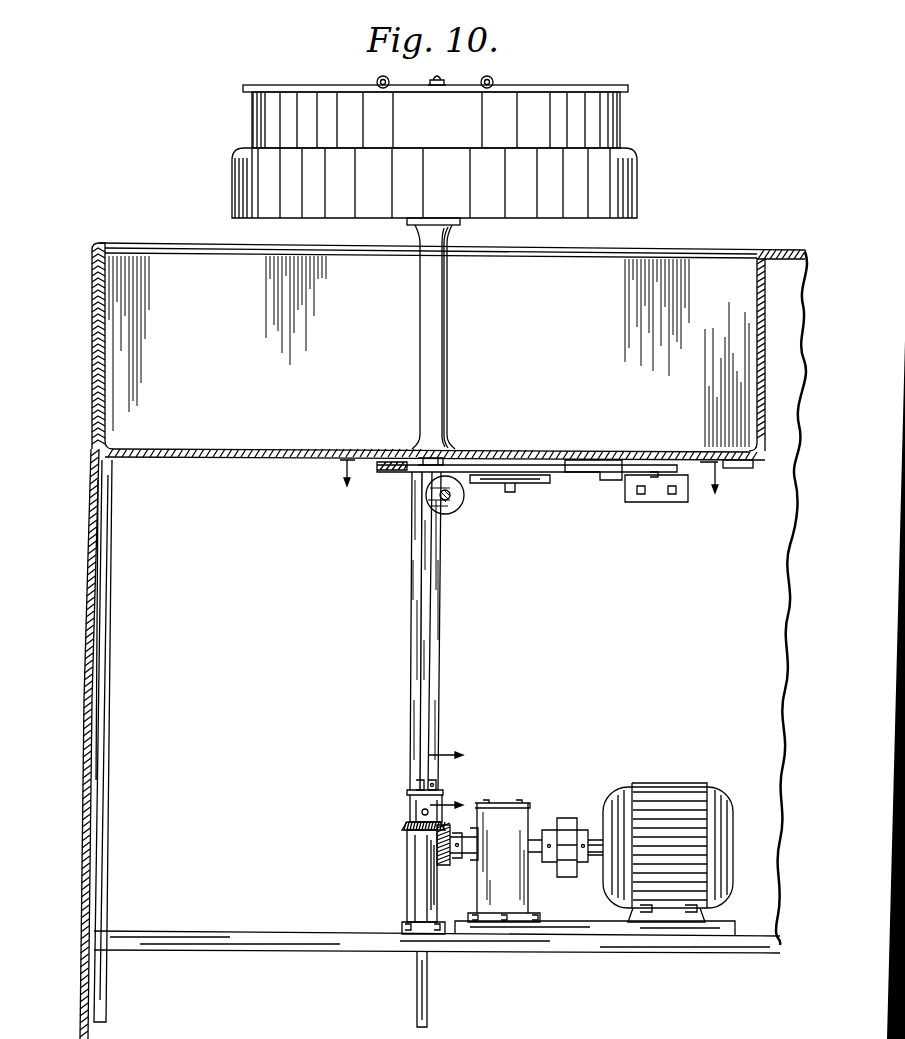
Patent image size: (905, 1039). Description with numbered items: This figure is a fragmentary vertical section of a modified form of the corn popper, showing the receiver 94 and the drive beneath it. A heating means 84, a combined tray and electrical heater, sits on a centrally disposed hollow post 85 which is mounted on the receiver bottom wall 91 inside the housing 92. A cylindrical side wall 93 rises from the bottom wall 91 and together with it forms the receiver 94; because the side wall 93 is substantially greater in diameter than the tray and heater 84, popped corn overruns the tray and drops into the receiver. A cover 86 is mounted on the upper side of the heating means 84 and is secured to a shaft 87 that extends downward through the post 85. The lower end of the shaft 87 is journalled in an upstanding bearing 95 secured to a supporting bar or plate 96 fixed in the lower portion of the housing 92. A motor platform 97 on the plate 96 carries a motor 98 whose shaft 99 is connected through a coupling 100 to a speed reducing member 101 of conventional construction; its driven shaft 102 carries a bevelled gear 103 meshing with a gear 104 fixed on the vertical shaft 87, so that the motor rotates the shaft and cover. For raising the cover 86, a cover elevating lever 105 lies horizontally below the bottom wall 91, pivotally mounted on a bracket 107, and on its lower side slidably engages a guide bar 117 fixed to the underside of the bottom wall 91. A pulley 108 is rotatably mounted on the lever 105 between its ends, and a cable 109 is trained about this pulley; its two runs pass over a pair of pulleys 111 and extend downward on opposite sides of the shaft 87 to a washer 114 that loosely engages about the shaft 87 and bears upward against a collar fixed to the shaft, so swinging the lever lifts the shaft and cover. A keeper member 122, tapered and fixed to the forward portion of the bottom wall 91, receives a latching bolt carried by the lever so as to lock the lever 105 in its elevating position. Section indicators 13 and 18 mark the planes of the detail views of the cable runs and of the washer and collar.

The heating means 84 is at (252, 173).
The hollow post 85 is at (427, 308).
The cover 86 is at (270, 115).
The shaft 87 is at (430, 677).
The receiver bottom wall 91 is at (217, 447).
The housing 92 is at (90, 596).
The cylindrical side wall 93 is at (103, 358).
The receiver 94 is at (108, 313).
The bearing 95 is at (420, 868).
The supporting bar or plate 96 is at (275, 934).
The motor platform 97 is at (580, 928).
The motor 98 is at (665, 790).
The motor shaft 99 is at (597, 844).
The coupling 100 is at (564, 830).
The speed reducing member 101 is at (508, 818).
The driven shaft 102 is at (466, 855).
The bevelled gear 103 is at (443, 865).
The gear 104 is at (408, 823).
The cover elevating lever 105 is at (552, 468).
The bracket 107 is at (628, 488).
The pulley 108 is at (532, 488).
The cable 109 is at (428, 557).
The pulleys 111 is at (460, 500).
The washer 114 is at (408, 790).
The guide bar 117 is at (583, 470).
The keeper member 122 is at (753, 468).
The cable runs 13 is at (529, 489).
The section line 18- 18 is at (458, 776).